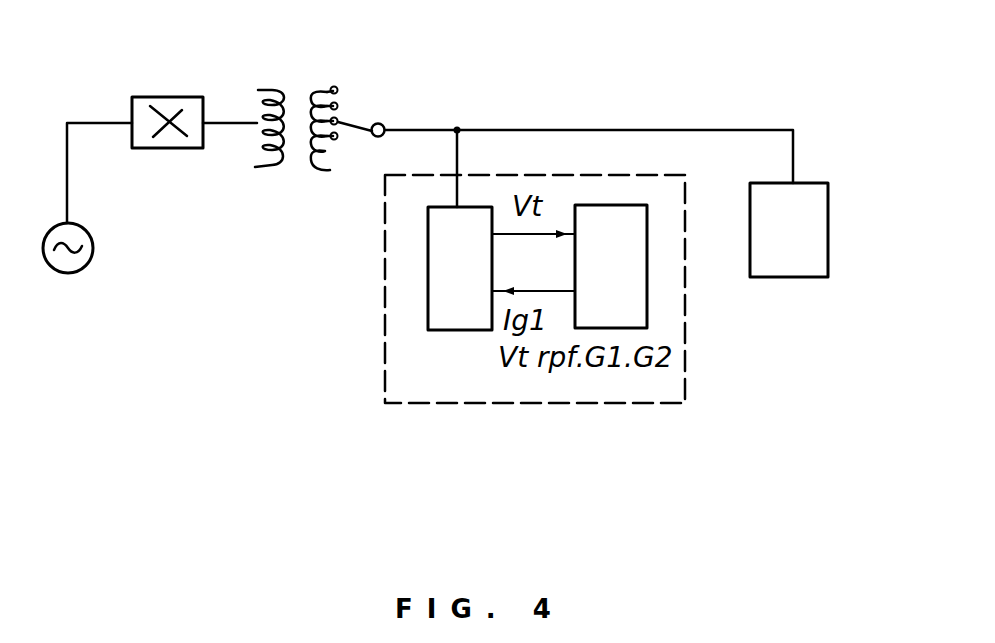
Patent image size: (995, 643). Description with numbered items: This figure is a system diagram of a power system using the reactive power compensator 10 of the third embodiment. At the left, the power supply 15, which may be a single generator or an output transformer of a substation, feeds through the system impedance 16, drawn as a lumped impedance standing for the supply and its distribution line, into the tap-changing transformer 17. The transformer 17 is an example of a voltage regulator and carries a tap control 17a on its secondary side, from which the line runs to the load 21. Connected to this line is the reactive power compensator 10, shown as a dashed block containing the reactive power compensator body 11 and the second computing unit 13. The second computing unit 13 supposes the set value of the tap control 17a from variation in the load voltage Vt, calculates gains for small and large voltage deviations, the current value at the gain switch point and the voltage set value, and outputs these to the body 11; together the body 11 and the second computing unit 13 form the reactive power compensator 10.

The reactive power compensator 10 is at (620, 403).
The reactive power compensator body 11 is at (450, 330).
The second computing unit 13 is at (633, 328).
The power supply 15 is at (83, 271).
The system impedance 16 is at (175, 97).
The tap-changing transformer 17 is at (255, 168).
The tap control 17a is at (382, 118).
The load 21 is at (828, 228).